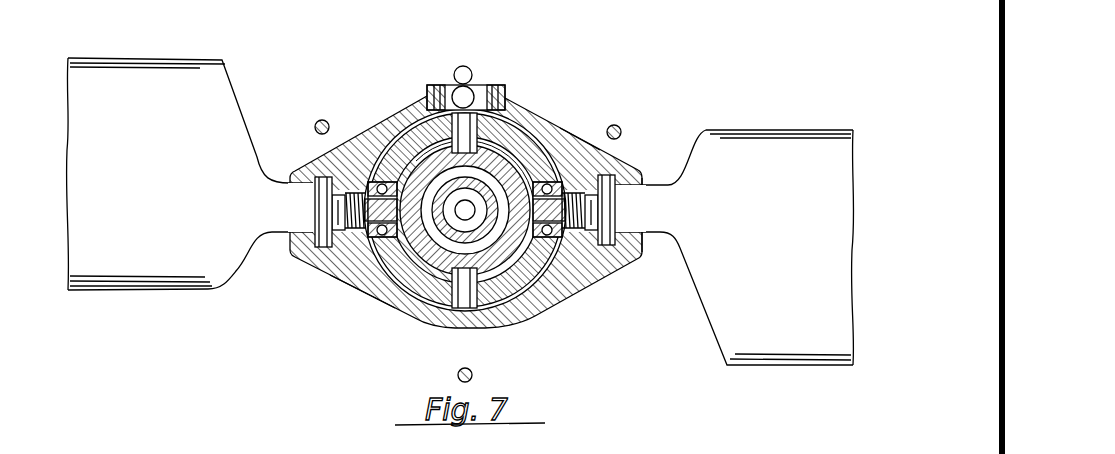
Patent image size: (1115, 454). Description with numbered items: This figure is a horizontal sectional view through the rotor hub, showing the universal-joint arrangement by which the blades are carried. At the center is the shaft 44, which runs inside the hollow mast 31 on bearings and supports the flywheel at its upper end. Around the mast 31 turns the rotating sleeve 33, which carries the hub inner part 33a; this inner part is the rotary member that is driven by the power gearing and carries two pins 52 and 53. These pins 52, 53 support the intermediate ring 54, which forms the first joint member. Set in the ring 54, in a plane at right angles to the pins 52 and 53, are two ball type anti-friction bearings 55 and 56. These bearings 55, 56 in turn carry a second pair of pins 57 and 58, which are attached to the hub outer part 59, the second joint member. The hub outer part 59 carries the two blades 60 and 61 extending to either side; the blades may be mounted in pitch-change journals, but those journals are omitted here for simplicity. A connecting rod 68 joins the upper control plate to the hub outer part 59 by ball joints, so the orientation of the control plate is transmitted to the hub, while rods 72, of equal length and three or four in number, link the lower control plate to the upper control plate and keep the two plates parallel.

The hollow mast 31 is at (372, 294).
The rotating sleeve 33 is at (416, 302).
The hub inner part 33a is at (522, 138).
The shaft 44 is at (463, 217).
The pin 52 is at (510, 130).
The pin 53 is at (520, 303).
The intermediate ring 54 is at (597, 122).
The ball type anti-friction bearing 55 is at (617, 168).
The ball type anti-friction bearing 56 is at (332, 272).
The pin 57 is at (312, 262).
The pin 58 is at (588, 235).
The hub outer part 59 is at (385, 120).
The blade 60 is at (228, 68).
The blade 61 is at (708, 128).
The connecting rod 68 is at (473, 75).
The rods 72 is at (328, 122).